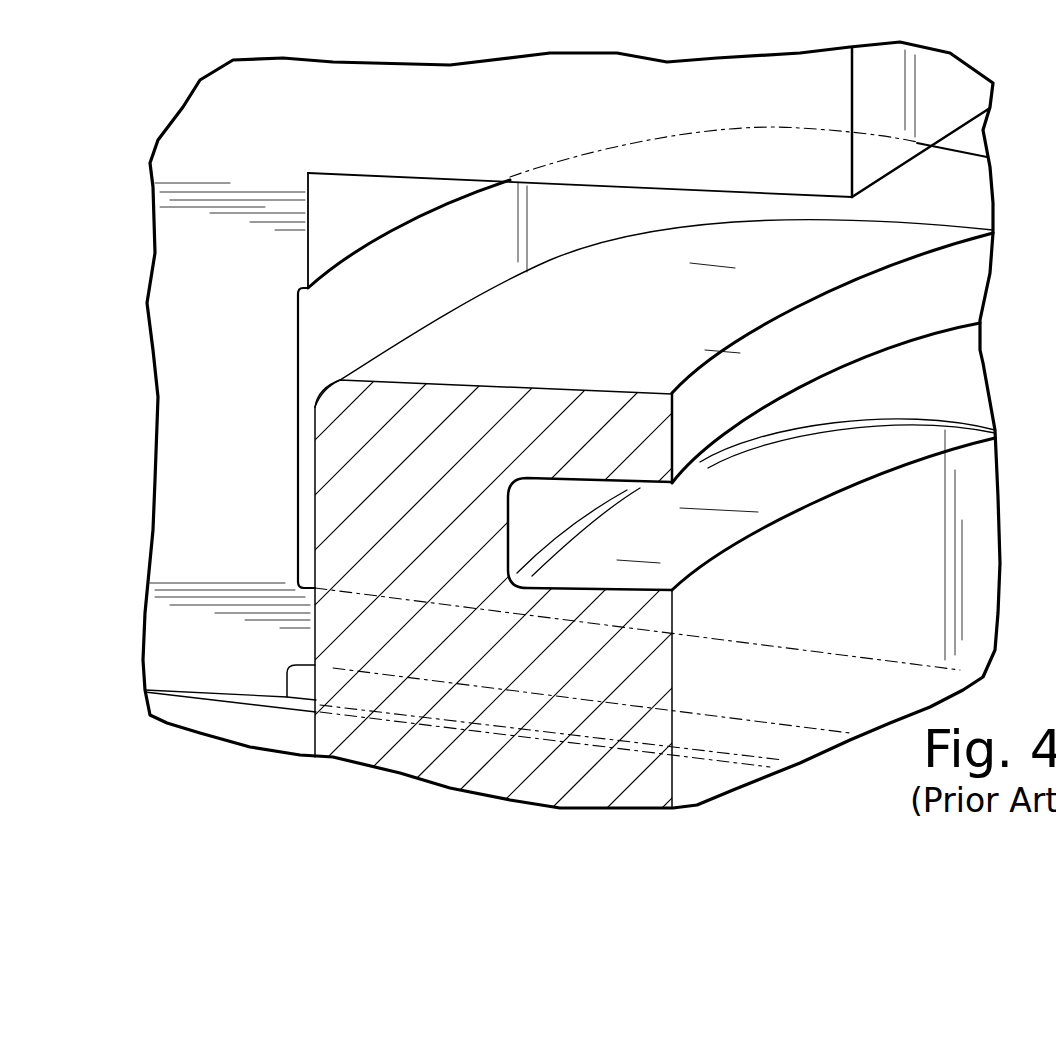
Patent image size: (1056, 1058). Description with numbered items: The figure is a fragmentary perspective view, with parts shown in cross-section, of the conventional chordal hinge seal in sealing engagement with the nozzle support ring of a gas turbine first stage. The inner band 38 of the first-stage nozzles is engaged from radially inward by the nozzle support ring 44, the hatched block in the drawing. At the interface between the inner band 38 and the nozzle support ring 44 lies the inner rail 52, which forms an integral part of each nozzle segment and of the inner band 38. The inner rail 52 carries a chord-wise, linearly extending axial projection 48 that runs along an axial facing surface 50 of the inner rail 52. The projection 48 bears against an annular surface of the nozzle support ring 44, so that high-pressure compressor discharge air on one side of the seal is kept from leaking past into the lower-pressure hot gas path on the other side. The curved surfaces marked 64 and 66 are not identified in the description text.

The inner band 38 is at (228, 97).
The nozzle support ring 44 is at (410, 763).
The axial projection 48 is at (305, 643).
The axial facing surface 50 is at (313, 323).
The inner rail 52 is at (207, 420).
The curved contact surface 64 is at (582, 345).
The upper plate 66 is at (900, 158).